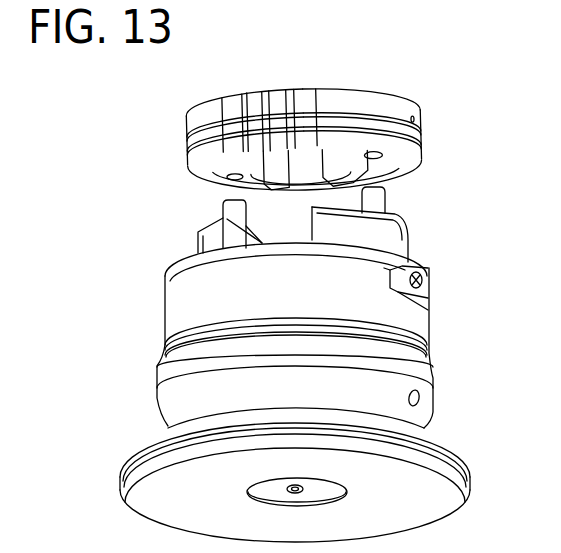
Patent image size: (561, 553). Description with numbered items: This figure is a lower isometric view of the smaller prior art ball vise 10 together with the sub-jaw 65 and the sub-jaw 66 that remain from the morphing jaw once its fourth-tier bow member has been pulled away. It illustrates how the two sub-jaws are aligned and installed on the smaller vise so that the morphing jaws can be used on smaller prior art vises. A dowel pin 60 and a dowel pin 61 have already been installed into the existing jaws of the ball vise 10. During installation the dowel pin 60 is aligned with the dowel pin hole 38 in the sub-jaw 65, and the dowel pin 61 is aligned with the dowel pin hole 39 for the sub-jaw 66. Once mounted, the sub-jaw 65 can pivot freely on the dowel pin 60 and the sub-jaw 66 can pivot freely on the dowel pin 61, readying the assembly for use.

The smaller prior art ball vise 10 is at (137, 331).
The dowel pin hole 38 is at (210, 181).
The dowel pin hole 39 is at (383, 162).
The dowel pin 60 is at (236, 211).
The dowel pin 61 is at (371, 201).
The sub-jaw 65 is at (237, 78).
The sub-jaw 66 is at (358, 70).